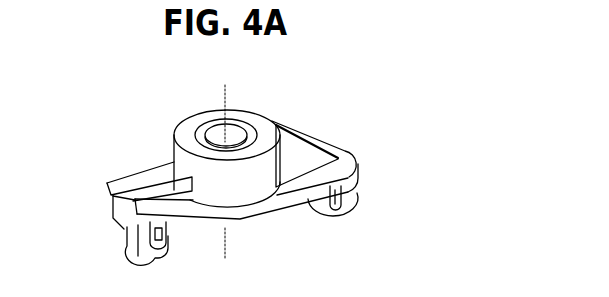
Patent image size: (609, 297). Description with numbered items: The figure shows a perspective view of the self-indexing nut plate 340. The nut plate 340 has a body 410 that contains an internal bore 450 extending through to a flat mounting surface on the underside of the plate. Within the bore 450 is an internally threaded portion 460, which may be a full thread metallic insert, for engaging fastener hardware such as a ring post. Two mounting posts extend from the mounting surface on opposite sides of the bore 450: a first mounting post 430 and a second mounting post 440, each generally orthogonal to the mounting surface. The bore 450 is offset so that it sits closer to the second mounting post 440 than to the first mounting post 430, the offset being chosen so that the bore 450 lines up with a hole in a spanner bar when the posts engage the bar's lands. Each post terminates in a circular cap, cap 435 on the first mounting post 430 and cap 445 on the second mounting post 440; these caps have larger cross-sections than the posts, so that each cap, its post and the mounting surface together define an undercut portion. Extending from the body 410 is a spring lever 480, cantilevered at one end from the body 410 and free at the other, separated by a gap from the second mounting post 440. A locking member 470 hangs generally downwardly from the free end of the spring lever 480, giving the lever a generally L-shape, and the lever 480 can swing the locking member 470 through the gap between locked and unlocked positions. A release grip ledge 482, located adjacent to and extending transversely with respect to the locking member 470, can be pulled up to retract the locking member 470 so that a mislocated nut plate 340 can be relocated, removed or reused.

The self-indexing nut plate 340 is at (80, 97).
The body 410 is at (188, 119).
The internal bore 450 is at (231, 141).
The internally threaded portion 460 is at (244, 132).
The spring lever 480 is at (137, 181).
The release grip ledge 482 is at (113, 203).
The locking member 470 is at (113, 220).
The second mounting post 440 is at (130, 243).
The circular cap 445 is at (163, 250).
The first mounting post 430 is at (320, 198).
The circular cap 435 is at (347, 210).